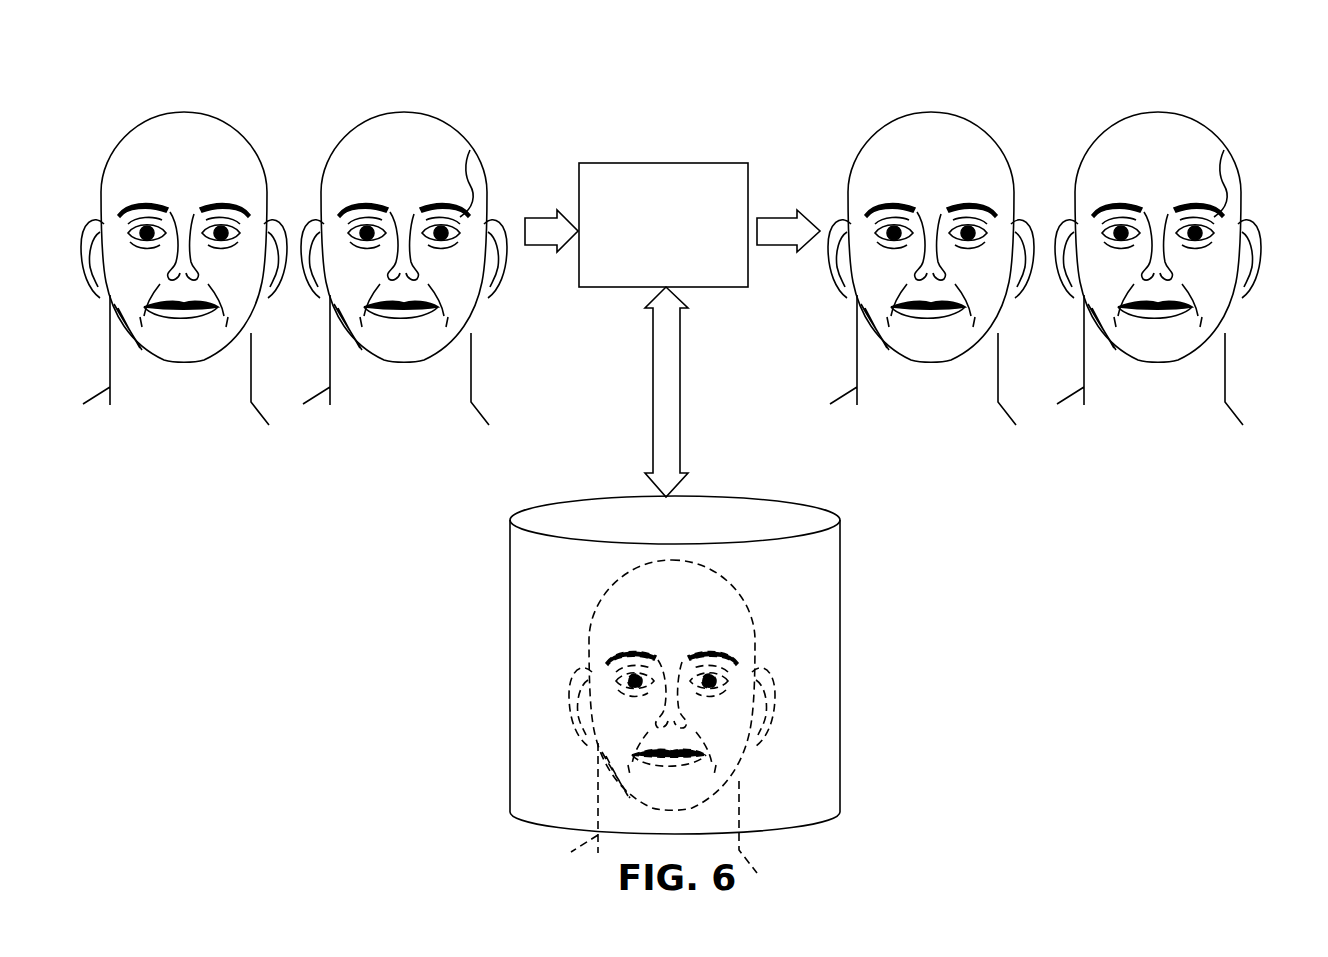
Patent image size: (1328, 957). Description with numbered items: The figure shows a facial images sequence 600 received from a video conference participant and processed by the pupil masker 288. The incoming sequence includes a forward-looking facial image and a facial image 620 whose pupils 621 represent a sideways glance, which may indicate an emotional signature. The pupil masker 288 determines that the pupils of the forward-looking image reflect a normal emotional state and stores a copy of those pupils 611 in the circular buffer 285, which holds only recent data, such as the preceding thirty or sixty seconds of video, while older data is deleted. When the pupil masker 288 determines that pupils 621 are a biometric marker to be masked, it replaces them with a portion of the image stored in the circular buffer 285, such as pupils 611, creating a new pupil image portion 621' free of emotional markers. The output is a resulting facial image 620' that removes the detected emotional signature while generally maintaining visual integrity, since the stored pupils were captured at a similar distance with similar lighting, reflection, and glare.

The facial images sequence 600 is at (1238, 86).
The facial image 620 is at (404, 239).
The pupils 621 is at (502, 170).
The pupil masker 288 is at (664, 162).
The circular buffer 285 is at (800, 502).
The pupils 611 is at (740, 597).
The facial image 620' is at (1158, 239).
The pupil image portion 621' is at (1256, 170).